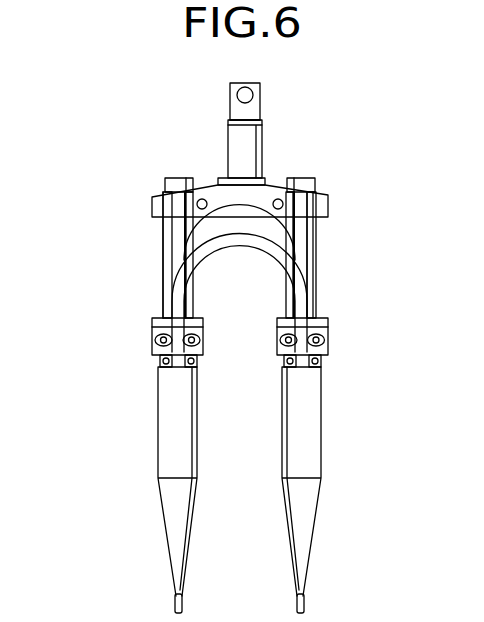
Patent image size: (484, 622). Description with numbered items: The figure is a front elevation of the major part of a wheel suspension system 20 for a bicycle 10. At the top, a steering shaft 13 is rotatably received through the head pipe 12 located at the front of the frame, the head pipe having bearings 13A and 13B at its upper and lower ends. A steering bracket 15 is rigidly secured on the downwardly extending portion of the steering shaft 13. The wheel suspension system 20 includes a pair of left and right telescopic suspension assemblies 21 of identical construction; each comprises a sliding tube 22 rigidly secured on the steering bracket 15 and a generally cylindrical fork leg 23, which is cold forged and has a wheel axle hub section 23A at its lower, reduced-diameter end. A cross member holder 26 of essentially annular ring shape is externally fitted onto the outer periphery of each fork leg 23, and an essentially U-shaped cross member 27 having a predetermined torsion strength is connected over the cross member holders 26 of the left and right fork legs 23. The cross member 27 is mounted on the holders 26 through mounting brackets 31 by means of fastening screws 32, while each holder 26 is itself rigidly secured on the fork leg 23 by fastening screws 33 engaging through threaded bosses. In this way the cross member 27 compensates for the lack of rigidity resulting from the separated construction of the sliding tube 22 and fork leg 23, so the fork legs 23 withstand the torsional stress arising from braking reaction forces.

The bicycle 10 is at (117, 220).
The head pipe 12 is at (262, 148).
The steering shaft 13 is at (230, 110).
The bearing 13A is at (262, 120).
The bearing 13B is at (267, 182).
The steering bracket 15 is at (328, 210).
The wheel suspension system 20 is at (155, 256).
The telescopic suspension assembly 21 is at (155, 294).
The sliding tube 22 is at (316, 250).
The fork leg 23 is at (165, 455).
The wheel axle hub section 23A is at (177, 603).
The cross member holder 26 is at (152, 333).
The cross member 27 is at (232, 245).
The mounting bracket 31 is at (163, 340).
The fastening screw 32 is at (158, 360).
The fastening screw 33 is at (165, 366).